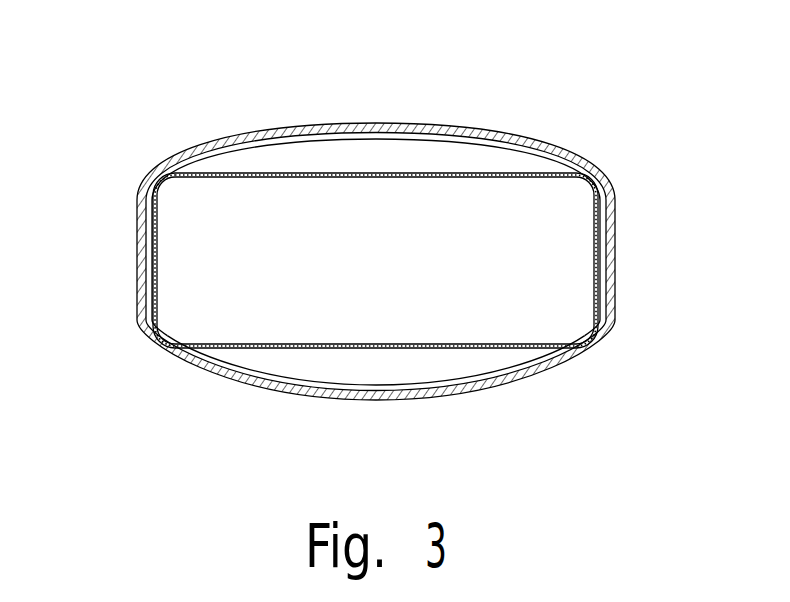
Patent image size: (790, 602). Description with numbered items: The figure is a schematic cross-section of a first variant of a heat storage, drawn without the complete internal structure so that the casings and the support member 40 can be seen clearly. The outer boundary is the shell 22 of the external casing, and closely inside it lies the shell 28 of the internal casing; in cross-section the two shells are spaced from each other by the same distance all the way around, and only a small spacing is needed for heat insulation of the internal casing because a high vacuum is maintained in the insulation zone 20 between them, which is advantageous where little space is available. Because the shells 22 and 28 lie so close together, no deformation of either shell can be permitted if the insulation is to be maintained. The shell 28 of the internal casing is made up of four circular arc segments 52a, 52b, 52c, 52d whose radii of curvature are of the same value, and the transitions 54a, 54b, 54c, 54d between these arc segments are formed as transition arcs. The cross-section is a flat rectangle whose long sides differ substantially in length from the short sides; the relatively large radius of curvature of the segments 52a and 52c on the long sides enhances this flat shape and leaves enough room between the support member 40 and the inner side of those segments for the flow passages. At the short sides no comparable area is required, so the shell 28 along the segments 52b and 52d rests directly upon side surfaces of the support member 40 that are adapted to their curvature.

The insulation zone 20 is at (320, 128).
The shell of the external casing 22 is at (424, 123).
The shell of the internal casing 28 is at (367, 134).
The support member 40 is at (284, 177).
The circular arc segment 52a is at (478, 143).
The circular arc segment 52b is at (602, 242).
The circular arc segment 52c is at (479, 375).
The circular arc segment 52d is at (153, 247).
The transition 54a is at (598, 178).
The transition 54b is at (602, 342).
The transition 54c is at (150, 345).
The transition 54d is at (150, 180).